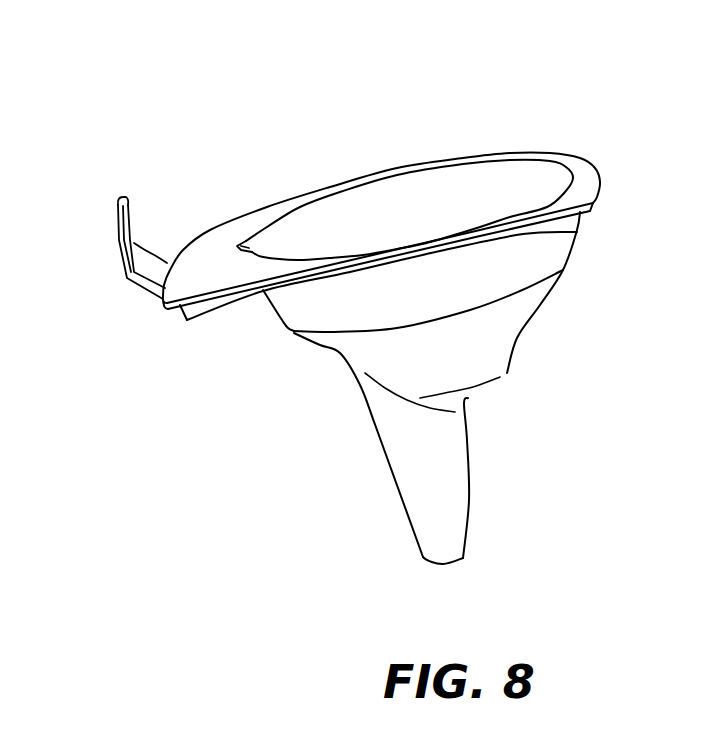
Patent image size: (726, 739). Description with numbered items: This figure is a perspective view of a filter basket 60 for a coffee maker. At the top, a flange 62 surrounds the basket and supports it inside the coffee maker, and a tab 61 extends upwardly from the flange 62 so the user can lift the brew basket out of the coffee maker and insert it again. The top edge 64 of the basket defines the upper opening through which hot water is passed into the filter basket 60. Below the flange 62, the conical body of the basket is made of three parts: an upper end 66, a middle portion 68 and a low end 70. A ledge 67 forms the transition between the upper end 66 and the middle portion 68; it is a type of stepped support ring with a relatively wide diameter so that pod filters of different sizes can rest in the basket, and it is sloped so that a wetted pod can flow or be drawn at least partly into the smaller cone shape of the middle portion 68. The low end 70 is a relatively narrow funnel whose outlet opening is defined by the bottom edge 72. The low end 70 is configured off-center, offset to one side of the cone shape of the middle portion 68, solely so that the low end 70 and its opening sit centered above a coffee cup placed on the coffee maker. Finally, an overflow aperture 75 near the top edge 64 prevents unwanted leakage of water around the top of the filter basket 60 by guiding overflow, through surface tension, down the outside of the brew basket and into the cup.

The filter basket 60 is at (394, 329).
The tab 61 is at (132, 241).
The flange 62 is at (583, 182).
The top edge 64 is at (518, 155).
The upper end 66 is at (560, 259).
The ledge 67 is at (518, 298).
The middle portion 68 is at (507, 373).
The low end 70 is at (455, 492).
The bottom edge 72 is at (463, 558).
The overflow aperture 75 is at (278, 204).